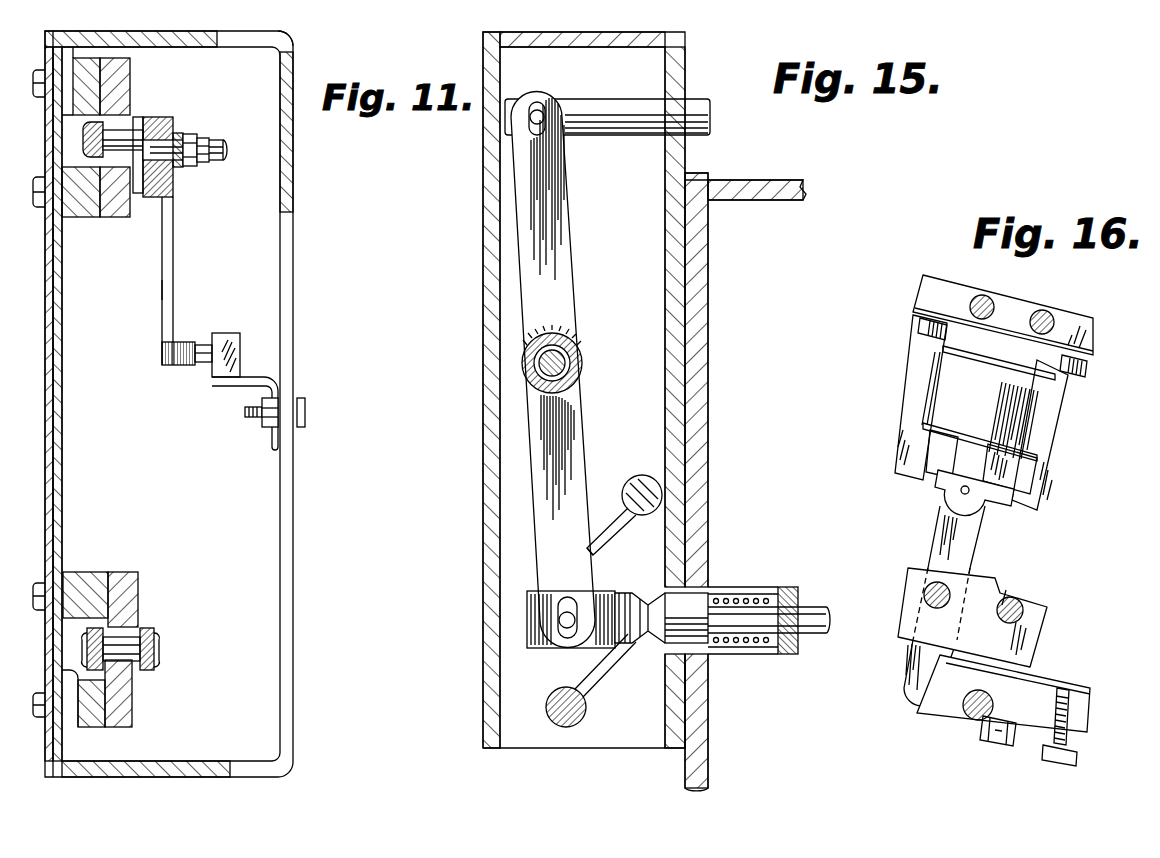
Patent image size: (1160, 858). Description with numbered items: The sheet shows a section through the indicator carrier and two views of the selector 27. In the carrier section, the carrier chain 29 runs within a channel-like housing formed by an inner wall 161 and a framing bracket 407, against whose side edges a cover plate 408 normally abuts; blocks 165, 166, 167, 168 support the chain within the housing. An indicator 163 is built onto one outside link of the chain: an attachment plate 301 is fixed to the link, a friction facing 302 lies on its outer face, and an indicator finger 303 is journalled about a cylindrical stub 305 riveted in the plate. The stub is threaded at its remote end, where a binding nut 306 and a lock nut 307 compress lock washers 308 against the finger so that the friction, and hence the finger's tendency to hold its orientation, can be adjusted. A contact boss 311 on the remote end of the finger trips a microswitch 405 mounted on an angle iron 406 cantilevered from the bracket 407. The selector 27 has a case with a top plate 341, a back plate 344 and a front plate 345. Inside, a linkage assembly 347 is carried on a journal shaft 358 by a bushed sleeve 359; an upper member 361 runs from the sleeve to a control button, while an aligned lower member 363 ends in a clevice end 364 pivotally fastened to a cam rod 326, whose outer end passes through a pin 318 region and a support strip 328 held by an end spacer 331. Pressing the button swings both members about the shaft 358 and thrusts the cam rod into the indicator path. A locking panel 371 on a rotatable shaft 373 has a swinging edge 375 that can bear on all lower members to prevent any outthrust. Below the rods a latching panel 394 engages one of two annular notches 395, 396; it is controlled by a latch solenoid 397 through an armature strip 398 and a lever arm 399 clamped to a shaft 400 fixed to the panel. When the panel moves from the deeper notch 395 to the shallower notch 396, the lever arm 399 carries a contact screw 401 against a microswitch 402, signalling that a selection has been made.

In FIG. 15, the selector 27 is at (567, 33).
In FIG. 11, the carrier chain 29 is at (118, 132).
In FIG. 11, the inner wall of the housing 161 is at (166, 760).
In FIG. 15, the inner wall of the housing 161 is at (786, 180).
In FIG. 11, the indicator 163 is at (177, 253).
In FIG. 11, the upper bearing block 165 is at (130, 70).
In FIG. 11, the lower bearing block 166 is at (118, 218).
In FIG. 11, the bearing block 167 is at (140, 594).
In FIG. 11, the bearing block 168 is at (133, 700).
In FIG. 11, the attachment plate 301 is at (143, 195).
In FIG. 11, the friction facing 302 is at (155, 198).
In FIG. 11, the indicator finger 303 is at (178, 292).
In FIG. 11, the cylindrical stub 305 is at (198, 148).
In FIG. 11, the binding nut 306 is at (198, 168).
In FIG. 11, the lock nut 307 is at (210, 165).
In FIG. 11, the lock washers 308 is at (176, 132).
In FIG. 11, the contact boss 311 is at (178, 368).
In FIG. 15, the pivot pin 318 is at (692, 100).
In FIG. 15, the cam rod 326 is at (727, 620).
In FIG. 15, the support strip 328 is at (790, 657).
In FIG. 15, the end spacer 331 is at (745, 657).
In FIG. 15, the top plate 341 is at (628, 32).
In FIG. 15, the back plate 344 is at (484, 156).
In FIG. 15, the front plate 345 is at (690, 154).
In FIG. 15, the linkage assembly 347 is at (556, 257).
In FIG. 15, the journal shaft 358 is at (541, 364).
In FIG. 15, the bushed sleeve 359 is at (530, 352).
In FIG. 15, the upper member 361 is at (545, 220).
In FIG. 15, the lower member 363 is at (545, 413).
In FIG. 15, the clevice end 364 is at (552, 613).
In FIG. 15, the locking panel 371 is at (620, 515).
In FIG. 15, the rotatable shaft 373 is at (661, 505).
In FIG. 15, the swinging edge 375 is at (589, 549).
In FIG. 15, the latching panel 394 is at (598, 668).
In FIG. 15, the annular notch 395 is at (647, 645).
In FIG. 15, the annular notch 396 is at (628, 592).
In FIG. 16, the latch solenoid 397 is at (1042, 390).
In FIG. 16, the armature strip 398 is at (913, 650).
In FIG. 16, the lever arm 399 is at (957, 710).
In FIG. 15, the shaft 400 is at (563, 727).
In FIG. 16, the shaft 400 is at (968, 714).
In FIG. 16, the contact screw 401 is at (1068, 740).
In FIG. 16, the microswitch 402 is at (1022, 633).
In FIG. 11, the microswitch 405 is at (228, 333).
In FIG. 11, the angle iron 406 is at (228, 390).
In FIG. 11, the framing bracket 407 is at (294, 348).
In FIG. 11, the cover plate 408 is at (297, 64).